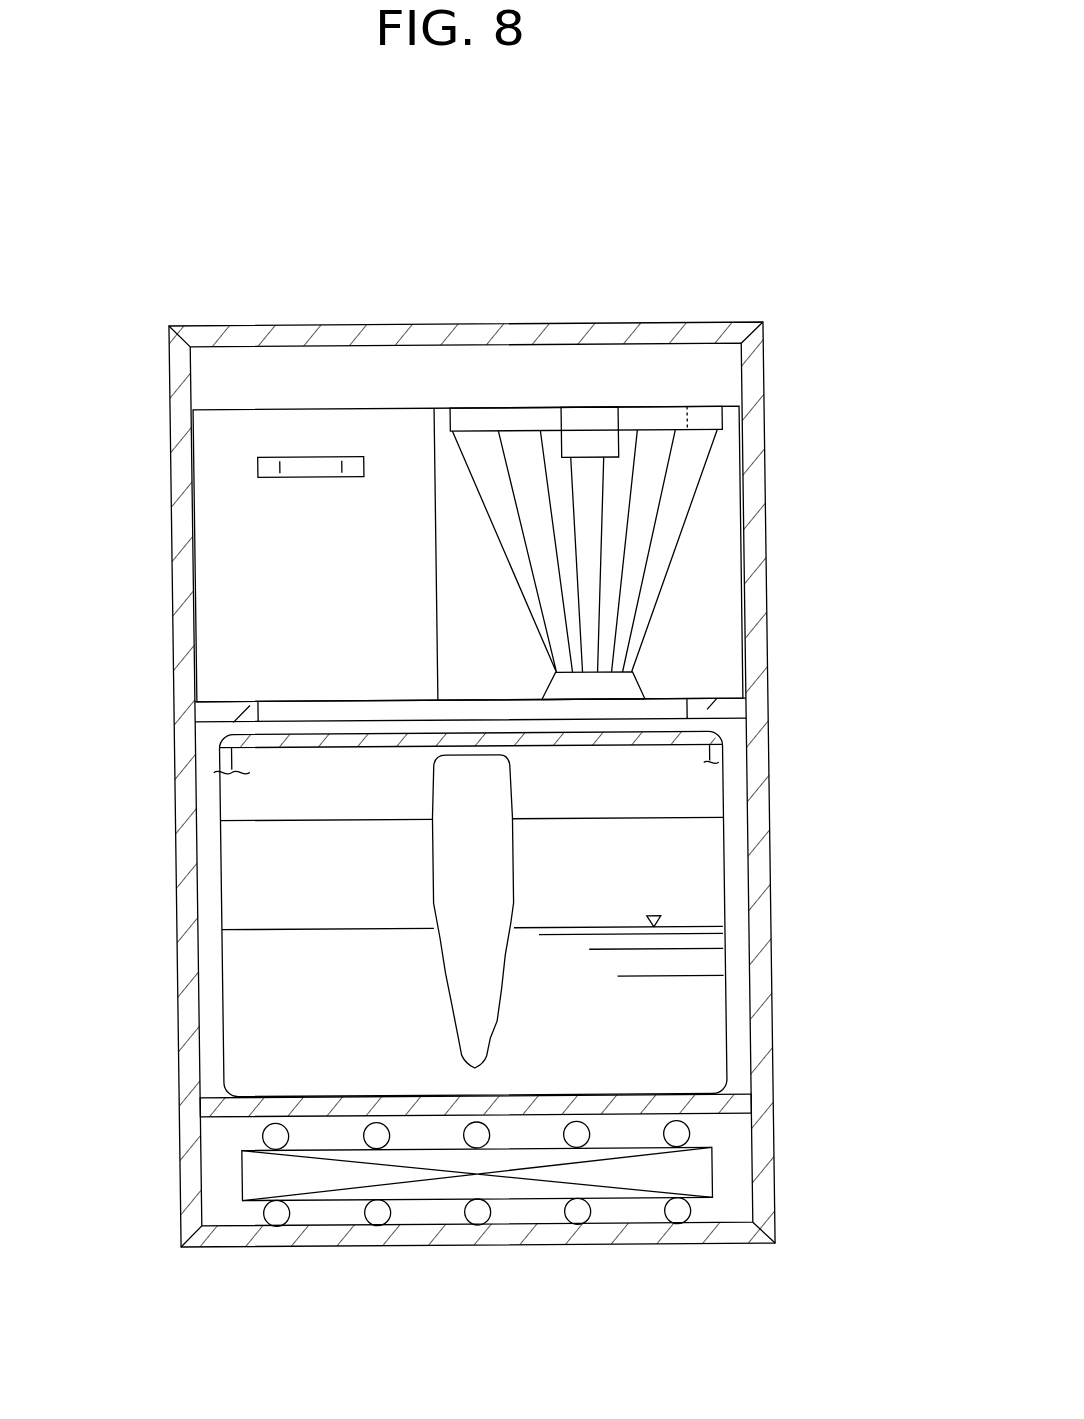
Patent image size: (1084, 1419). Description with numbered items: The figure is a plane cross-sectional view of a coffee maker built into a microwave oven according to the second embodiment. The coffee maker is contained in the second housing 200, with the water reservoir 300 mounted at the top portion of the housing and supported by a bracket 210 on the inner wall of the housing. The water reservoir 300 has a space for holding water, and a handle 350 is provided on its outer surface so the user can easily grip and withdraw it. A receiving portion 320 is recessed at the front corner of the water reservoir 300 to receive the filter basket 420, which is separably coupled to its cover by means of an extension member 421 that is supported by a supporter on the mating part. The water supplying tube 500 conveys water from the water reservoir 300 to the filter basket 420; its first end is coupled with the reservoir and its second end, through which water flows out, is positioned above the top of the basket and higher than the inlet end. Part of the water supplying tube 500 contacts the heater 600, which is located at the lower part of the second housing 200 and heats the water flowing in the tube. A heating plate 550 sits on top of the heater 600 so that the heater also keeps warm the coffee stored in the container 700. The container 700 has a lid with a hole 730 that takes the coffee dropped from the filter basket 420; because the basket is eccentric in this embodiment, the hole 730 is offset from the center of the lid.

The second housing 200 is at (778, 899).
The bracket 210 is at (228, 716).
The water reservoir 300 is at (317, 393).
The receiving portion 320 is at (703, 622).
The handle 350 is at (322, 455).
The filter basket 420 is at (684, 553).
The extension member 421 is at (593, 418).
The water supplying tube 500 is at (377, 1226).
The heating plate 550 is at (687, 1100).
The heater 600 is at (503, 1187).
The container 700 is at (700, 1017).
The hole 730 is at (637, 735).